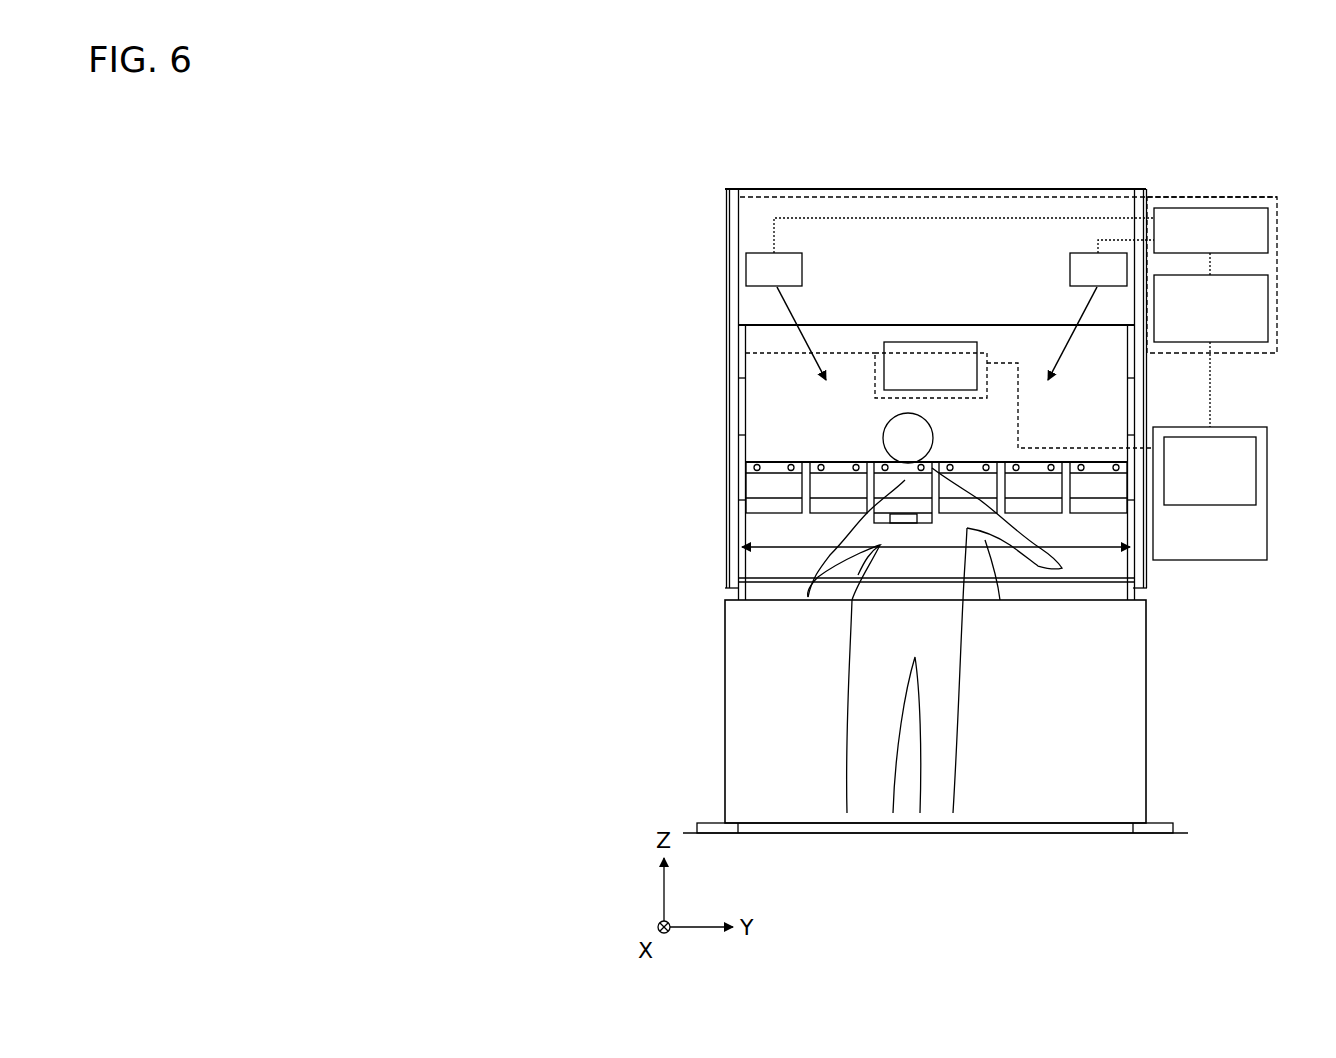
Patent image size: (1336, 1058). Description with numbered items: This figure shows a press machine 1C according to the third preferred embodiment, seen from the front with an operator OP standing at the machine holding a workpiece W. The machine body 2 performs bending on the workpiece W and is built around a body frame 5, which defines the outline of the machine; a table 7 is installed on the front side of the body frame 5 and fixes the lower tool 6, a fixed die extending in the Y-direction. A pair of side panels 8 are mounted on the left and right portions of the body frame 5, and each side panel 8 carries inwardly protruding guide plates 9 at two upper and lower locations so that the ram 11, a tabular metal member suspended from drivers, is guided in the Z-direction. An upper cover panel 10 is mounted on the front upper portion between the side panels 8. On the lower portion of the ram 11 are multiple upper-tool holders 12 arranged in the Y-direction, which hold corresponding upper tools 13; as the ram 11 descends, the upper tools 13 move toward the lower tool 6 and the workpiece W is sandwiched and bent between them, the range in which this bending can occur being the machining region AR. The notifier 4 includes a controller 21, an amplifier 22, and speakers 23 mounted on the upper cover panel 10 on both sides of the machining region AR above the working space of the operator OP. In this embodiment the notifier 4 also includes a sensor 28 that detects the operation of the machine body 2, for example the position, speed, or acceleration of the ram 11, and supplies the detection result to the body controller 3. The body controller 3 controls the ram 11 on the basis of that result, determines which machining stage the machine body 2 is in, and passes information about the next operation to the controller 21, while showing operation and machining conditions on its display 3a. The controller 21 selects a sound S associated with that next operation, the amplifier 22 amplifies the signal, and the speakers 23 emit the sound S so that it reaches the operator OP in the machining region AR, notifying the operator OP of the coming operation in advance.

The press machine 1C is at (963, 122).
The machine body 2 is at (1165, 598).
The body controller 3 is at (1267, 500).
The display 3a is at (1256, 470).
The notifier 4 is at (1212, 197).
The body frame 5 is at (724, 292).
The lower tool 6 is at (725, 590).
The table 7 is at (1146, 713).
The side panel 8 is at (730, 375).
The guide plate 9 is at (740, 450).
The upper cover panel 10 is at (941, 252).
The ram 11 is at (757, 403).
The upper-tool holder 12 is at (840, 483).
The upper tool 13 is at (900, 525).
The controller 21 is at (1268, 310).
The amplifier 22 is at (1268, 231).
The speaker 23 is at (766, 252).
The sensor 28 is at (928, 342).
The sound S is at (793, 315).
The workpiece W is at (1087, 577).
The machining region AR is at (978, 590).
The operator OP is at (968, 655).